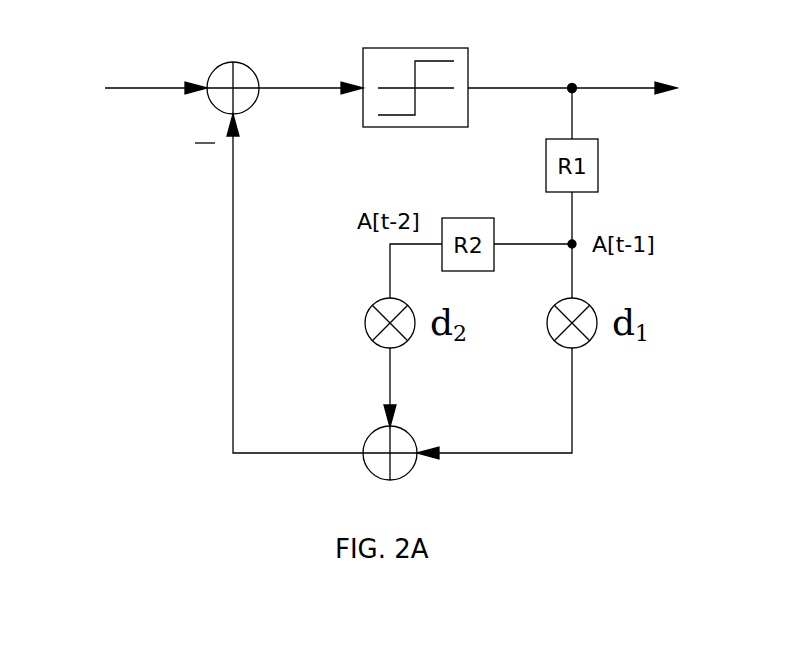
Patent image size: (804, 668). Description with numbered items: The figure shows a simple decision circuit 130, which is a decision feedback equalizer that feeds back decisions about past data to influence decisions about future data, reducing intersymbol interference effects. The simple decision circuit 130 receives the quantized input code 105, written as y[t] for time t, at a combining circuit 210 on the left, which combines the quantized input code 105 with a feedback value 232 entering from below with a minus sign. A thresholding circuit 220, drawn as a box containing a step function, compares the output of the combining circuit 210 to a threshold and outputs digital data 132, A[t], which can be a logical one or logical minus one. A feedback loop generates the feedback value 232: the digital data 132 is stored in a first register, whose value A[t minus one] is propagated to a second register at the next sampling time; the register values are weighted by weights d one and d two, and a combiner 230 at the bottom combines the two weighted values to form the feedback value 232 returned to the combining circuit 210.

The quantized input code 105 is at (139, 99).
The simple decision circuit 130 is at (209, 283).
The digital data 132 is at (628, 81).
The combining circuit 210 is at (241, 52).
The thresholding circuit 220 is at (431, 46).
The combiner 230 is at (367, 476).
The feedback value 232 is at (221, 188).